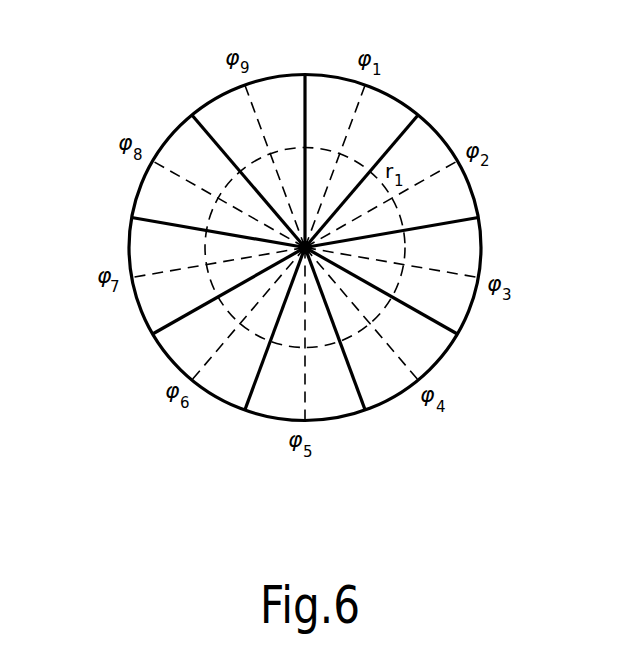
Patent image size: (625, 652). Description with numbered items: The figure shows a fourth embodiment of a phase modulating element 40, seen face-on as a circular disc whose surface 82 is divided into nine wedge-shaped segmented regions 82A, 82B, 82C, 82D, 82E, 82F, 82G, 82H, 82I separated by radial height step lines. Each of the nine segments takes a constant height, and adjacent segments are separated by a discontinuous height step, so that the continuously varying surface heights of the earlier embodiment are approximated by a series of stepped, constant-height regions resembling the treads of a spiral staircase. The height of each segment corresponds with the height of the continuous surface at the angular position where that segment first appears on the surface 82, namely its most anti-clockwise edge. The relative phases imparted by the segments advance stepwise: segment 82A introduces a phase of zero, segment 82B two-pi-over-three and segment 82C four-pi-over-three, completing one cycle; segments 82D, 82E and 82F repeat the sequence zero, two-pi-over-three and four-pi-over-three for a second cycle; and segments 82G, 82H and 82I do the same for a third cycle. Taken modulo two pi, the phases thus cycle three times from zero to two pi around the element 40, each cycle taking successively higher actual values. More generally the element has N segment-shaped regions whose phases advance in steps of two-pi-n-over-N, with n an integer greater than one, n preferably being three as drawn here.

The surface 82 is at (305, 259).
The phase modulating element 40 is at (480, 198).
The segmented region 82A is at (390, 107).
The segmented region 82B is at (458, 180).
The segmented region 82C is at (472, 257).
The segmented region 82D is at (433, 352).
The segmented region 82E is at (347, 412).
The segmented region 82F is at (253, 413).
The segmented region 82G is at (175, 352).
The segmented region 82H is at (153, 193).
The segmented region 82I is at (227, 107).